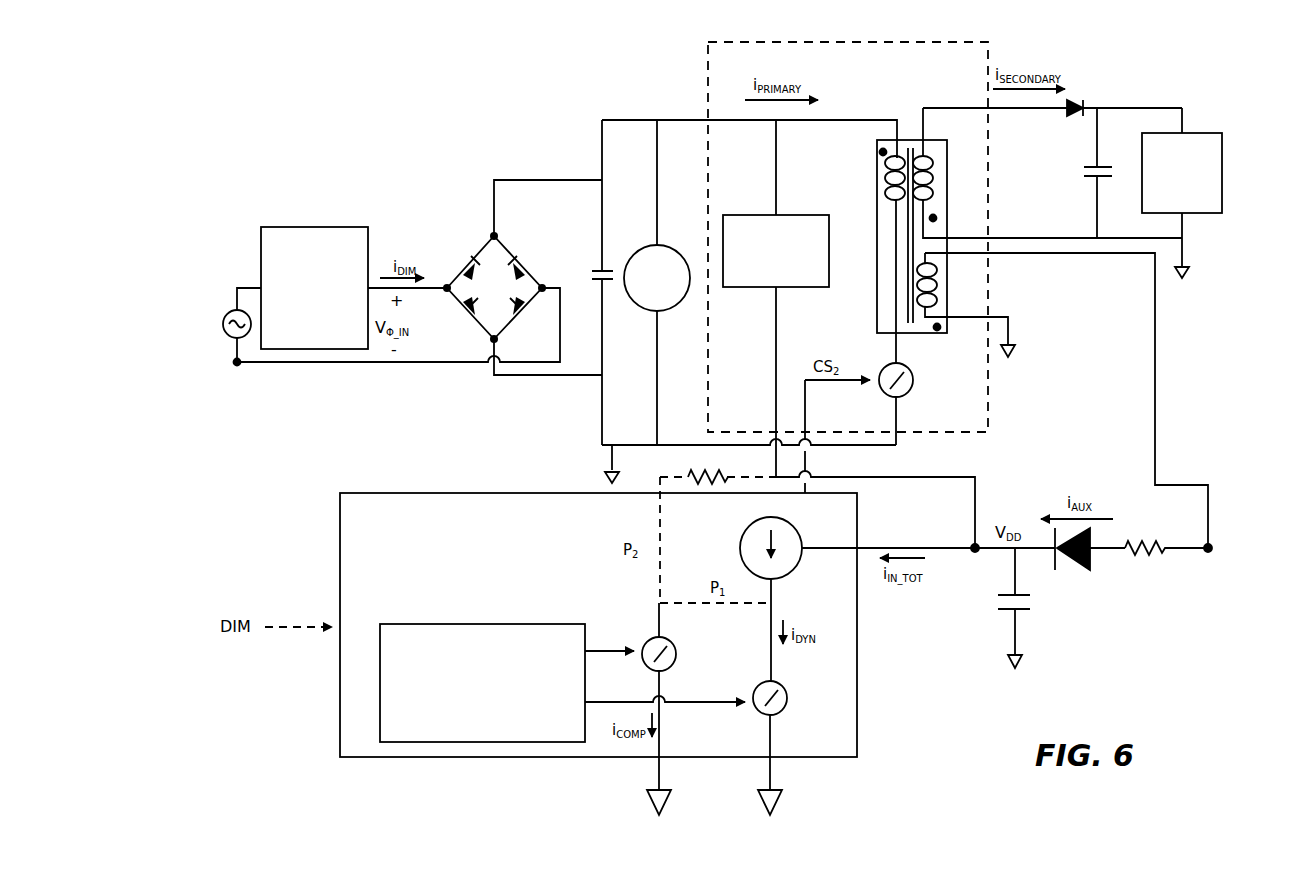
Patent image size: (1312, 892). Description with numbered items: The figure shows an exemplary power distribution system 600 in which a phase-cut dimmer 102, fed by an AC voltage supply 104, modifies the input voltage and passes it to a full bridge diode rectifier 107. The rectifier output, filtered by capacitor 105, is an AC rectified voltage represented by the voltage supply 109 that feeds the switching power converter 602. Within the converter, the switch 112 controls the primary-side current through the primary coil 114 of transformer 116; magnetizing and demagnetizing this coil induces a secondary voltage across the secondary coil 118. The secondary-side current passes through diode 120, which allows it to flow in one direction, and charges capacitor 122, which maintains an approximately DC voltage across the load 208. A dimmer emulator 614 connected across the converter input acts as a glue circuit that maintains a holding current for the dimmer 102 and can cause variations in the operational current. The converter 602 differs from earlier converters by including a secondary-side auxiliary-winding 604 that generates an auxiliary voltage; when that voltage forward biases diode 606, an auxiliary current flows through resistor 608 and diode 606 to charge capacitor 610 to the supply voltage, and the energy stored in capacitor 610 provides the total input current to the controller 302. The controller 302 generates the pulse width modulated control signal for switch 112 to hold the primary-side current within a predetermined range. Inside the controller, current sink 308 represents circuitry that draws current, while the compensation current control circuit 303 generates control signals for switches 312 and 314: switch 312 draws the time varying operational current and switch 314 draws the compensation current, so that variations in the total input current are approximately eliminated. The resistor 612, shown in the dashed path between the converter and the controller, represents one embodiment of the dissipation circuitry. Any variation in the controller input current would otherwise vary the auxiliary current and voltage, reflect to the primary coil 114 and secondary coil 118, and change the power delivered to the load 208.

The phase cut dimmer 102 is at (314, 288).
The voltage supply 104 is at (229, 340).
The capacitor 105 is at (598, 270).
The full bridge diode rectifier 107 is at (494, 287).
The voltage supply 109 is at (660, 244).
The switch 112 is at (906, 396).
The primary coil 114 is at (889, 176).
The transformer 116 is at (917, 140).
The secondary coil 118 is at (936, 157).
The diode 120 is at (1078, 100).
The capacitor 122 is at (1090, 175).
The load 208 is at (1182, 193).
The controller 302 is at (598, 625).
The compensation current control circuit 303 is at (482, 683).
The current sink 308 is at (802, 534).
The switch 312 is at (788, 684).
The switch 314 is at (676, 646).
The power distribution system 600 is at (1283, 72).
The switching power converter 602 is at (708, 92).
The secondary-side auxiliary-winding 604 is at (916, 316).
The diode 606 is at (1076, 566).
The resistor 608 is at (1152, 556).
The capacitor 610 is at (1000, 611).
The resistor 612 is at (690, 473).
The dimmer emulator 614 is at (776, 251).